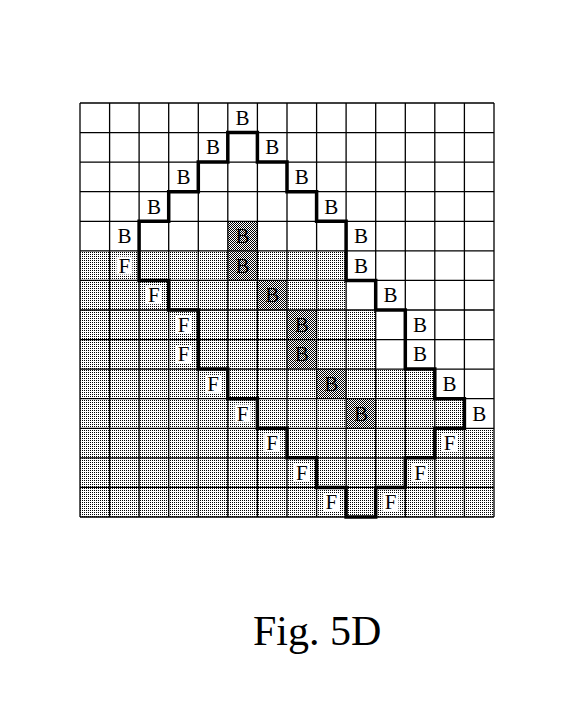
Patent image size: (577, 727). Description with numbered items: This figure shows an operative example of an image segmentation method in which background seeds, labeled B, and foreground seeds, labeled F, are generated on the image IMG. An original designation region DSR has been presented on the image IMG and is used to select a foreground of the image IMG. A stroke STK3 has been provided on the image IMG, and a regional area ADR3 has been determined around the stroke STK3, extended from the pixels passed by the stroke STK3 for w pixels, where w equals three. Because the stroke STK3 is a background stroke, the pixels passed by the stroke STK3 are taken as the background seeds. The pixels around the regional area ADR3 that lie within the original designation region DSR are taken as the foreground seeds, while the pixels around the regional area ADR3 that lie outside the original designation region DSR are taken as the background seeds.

The image IMG is at (107, 67).
The original designation region DSR is at (145, 478).
The stroke STK3 is at (329, 412).
The regional area ADR3 is at (416, 489).